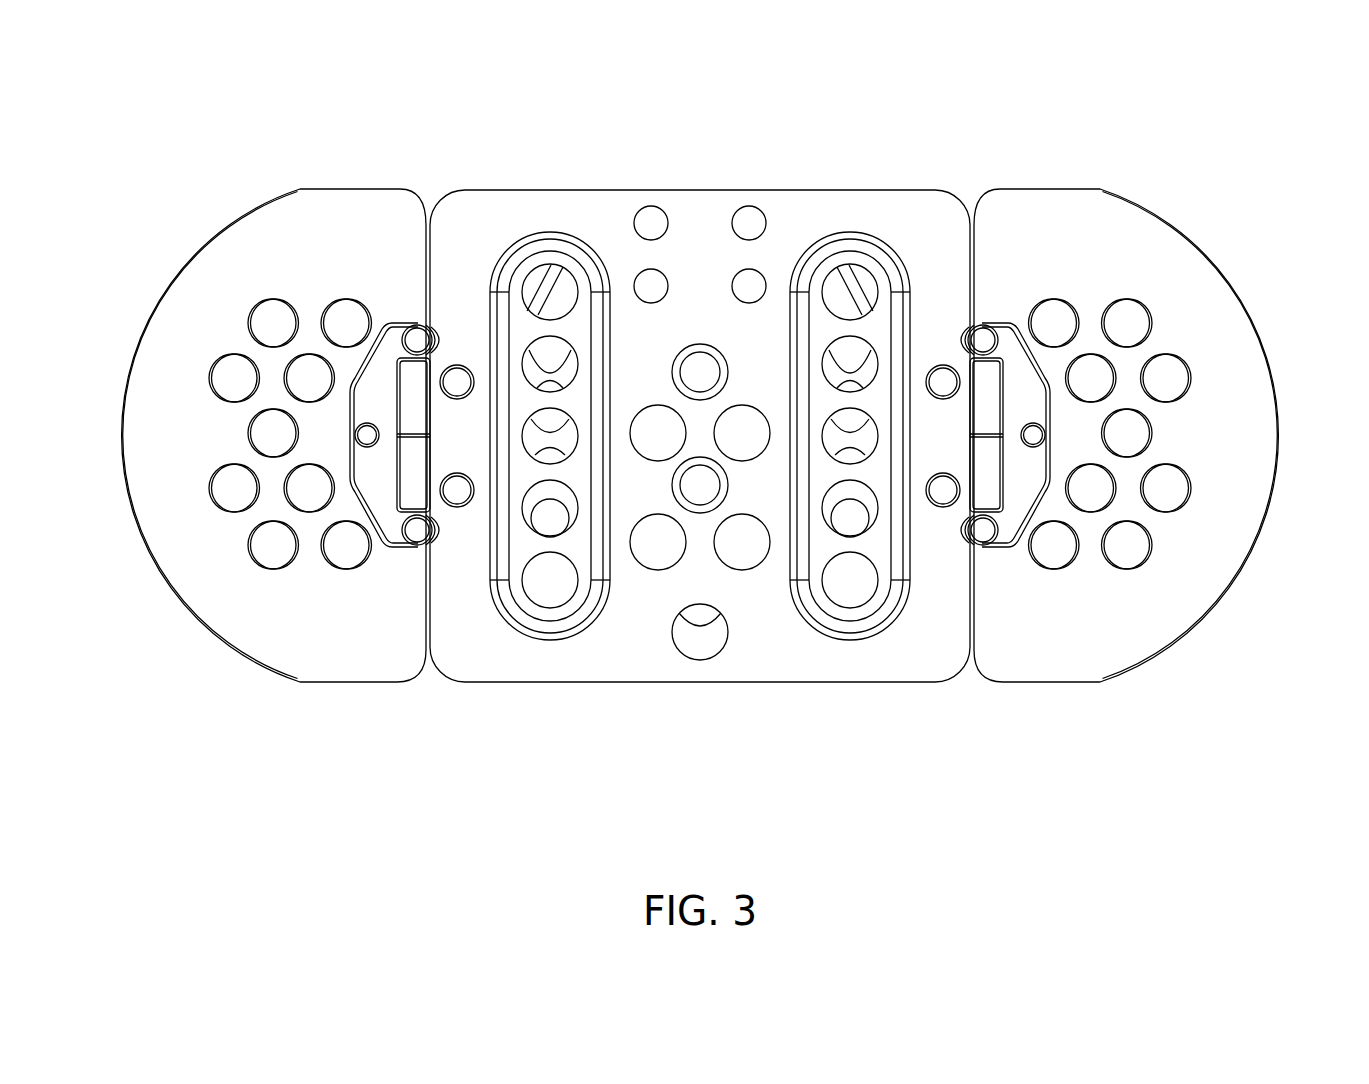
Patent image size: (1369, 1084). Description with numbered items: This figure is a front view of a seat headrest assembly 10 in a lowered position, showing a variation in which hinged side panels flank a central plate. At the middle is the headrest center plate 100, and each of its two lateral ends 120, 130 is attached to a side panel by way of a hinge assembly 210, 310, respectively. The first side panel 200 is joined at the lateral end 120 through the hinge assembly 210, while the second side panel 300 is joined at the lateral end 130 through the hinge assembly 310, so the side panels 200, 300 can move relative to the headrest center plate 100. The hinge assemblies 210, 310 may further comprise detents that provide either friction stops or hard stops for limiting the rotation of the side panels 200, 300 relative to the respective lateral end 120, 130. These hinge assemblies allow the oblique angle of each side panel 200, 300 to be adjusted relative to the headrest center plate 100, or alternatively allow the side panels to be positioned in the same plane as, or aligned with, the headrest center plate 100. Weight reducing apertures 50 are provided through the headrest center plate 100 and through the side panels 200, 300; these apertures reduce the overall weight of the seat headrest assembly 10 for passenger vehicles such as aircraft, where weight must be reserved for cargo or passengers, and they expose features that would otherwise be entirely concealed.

The seat headrest assembly 10 is at (210, 115).
The headrest center plate 100 is at (605, 207).
The second side panel 300 is at (172, 310).
The first side panel 200 is at (1228, 310).
The lateral end 130 is at (428, 282).
The lateral end 120 is at (972, 282).
The hinge assembly 310 is at (380, 480).
The hinge assembly 210 is at (1020, 480).
The weight reducing apertures 50 is at (702, 636).